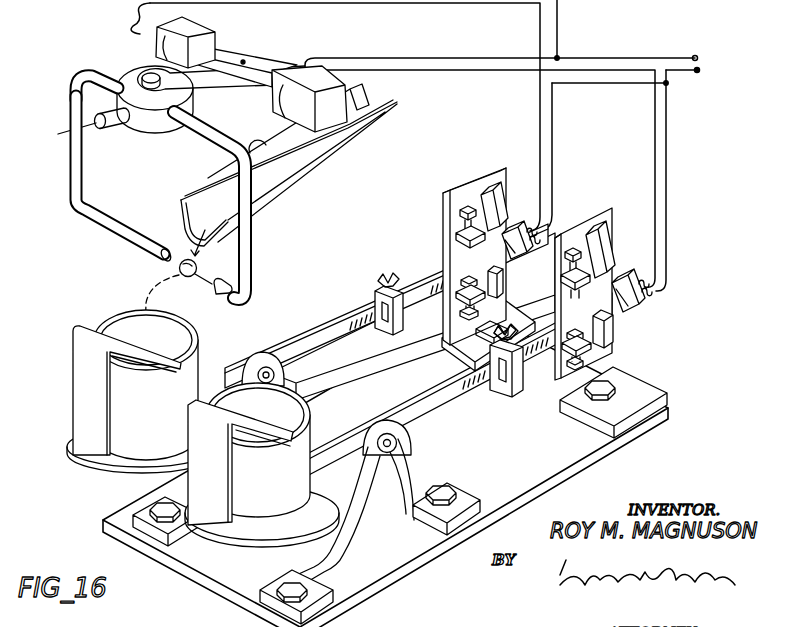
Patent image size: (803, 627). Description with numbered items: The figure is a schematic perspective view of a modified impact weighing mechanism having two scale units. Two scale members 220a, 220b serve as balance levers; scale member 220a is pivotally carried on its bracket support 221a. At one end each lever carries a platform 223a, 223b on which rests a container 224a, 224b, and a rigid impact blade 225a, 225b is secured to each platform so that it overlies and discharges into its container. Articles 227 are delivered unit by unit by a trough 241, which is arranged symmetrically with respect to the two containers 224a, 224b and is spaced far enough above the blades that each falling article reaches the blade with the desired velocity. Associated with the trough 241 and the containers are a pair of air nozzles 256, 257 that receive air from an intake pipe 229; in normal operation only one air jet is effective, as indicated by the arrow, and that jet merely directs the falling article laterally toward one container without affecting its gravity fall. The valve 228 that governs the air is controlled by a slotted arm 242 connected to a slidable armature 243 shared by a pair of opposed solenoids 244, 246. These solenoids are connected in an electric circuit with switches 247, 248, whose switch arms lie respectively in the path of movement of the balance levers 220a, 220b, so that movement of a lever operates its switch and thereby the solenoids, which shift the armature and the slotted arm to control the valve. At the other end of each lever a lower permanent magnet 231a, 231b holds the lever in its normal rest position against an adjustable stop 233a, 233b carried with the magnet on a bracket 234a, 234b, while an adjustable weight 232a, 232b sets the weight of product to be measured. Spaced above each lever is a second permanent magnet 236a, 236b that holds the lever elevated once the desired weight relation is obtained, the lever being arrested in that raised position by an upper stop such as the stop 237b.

The scale member 220a is at (433, 418).
The scale member 220b is at (346, 321).
The bracket support 221a is at (393, 475).
The platform 223a is at (250, 524).
The platform 223b is at (130, 450).
The container 224a is at (290, 492).
The container 224b is at (178, 405).
The rigid impact blade 225a is at (200, 458).
The rigid impact blade 225b is at (82, 370).
The article 227 is at (197, 267).
The valve 228 is at (165, 125).
The intake pipe 229 is at (118, 129).
The lower permanent magnet 231a is at (613, 335).
The lower permanent magnet 231b is at (501, 284).
The adjustable weight 232a is at (503, 391).
The adjustable weight 232b is at (389, 333).
The adjustable stop 233a is at (588, 362).
The adjustable stop 233b is at (466, 309).
The bracket 234a is at (610, 224).
The bracket 234b is at (513, 160).
The second permanent magnet 236a is at (606, 249).
The second permanent magnet 236b is at (502, 206).
The upper stop 237b is at (458, 212).
The trough 241 is at (290, 190).
The slotted arm 242 is at (207, 84).
The slidable armature 243 is at (250, 60).
The solenoid 244 is at (204, 30).
The solenoid 246 is at (340, 110).
The switch 247 is at (638, 301).
The switch 248 is at (516, 256).
The air nozzle 256 is at (226, 300).
The air nozzle 257 is at (140, 256).